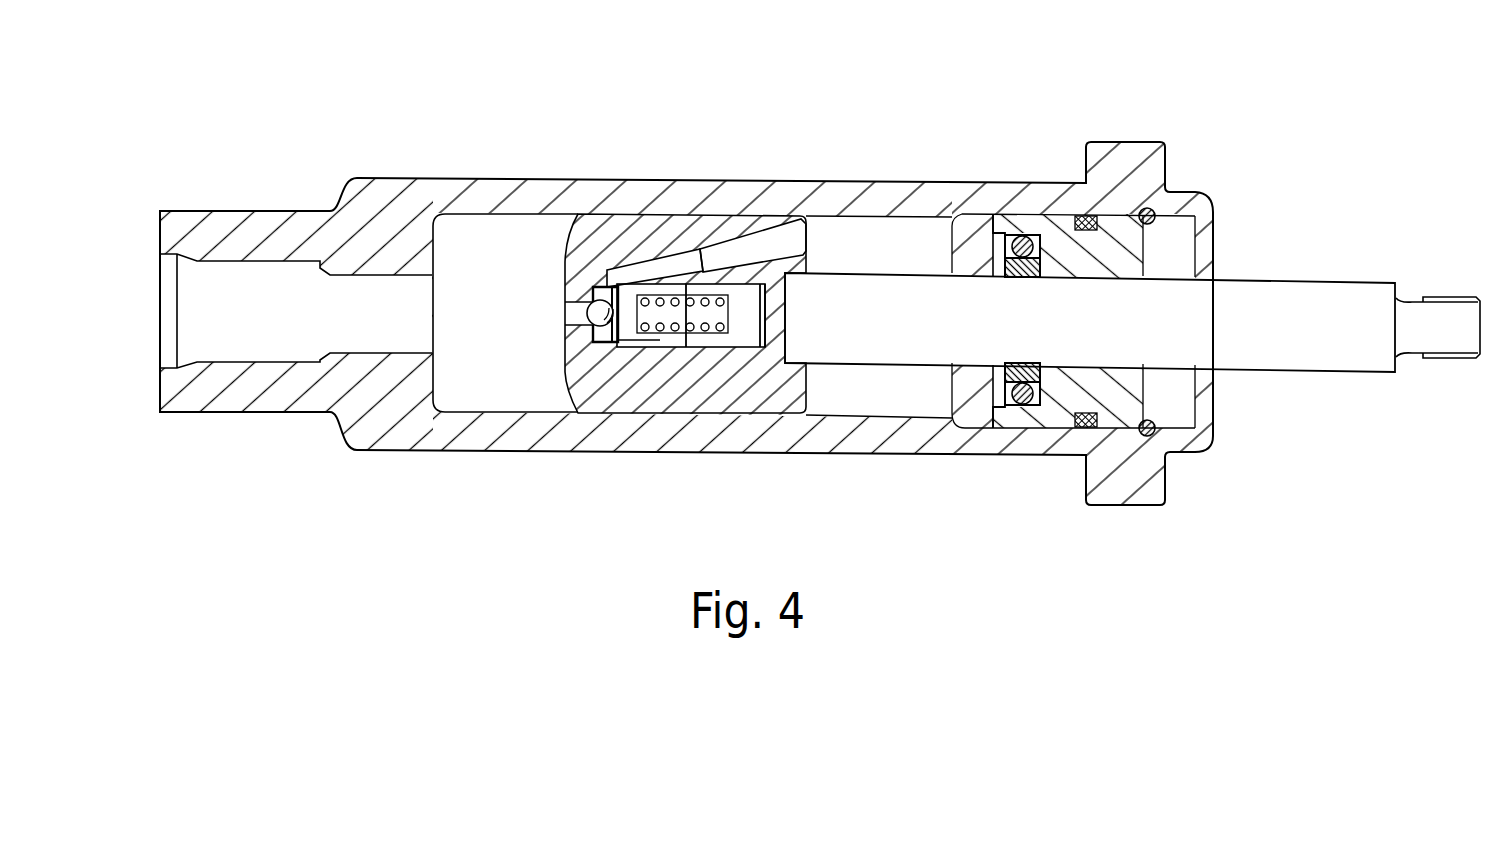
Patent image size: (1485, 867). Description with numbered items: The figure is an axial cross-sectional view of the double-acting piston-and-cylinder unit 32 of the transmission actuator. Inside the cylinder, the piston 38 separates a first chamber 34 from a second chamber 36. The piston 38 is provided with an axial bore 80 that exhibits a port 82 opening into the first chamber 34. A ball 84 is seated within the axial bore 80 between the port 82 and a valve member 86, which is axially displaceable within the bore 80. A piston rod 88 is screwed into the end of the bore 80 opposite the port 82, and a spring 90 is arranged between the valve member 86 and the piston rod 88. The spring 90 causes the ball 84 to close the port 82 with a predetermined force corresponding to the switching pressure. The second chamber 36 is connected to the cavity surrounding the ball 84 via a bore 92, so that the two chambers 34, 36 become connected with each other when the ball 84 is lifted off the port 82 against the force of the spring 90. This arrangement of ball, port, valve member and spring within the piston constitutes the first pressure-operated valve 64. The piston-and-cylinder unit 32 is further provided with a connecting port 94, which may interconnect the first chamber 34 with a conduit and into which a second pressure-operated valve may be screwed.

The double-acting piston-and-cylinder unit 32 is at (1017, 117).
The first chamber 34 is at (522, 238).
The second chamber 36 is at (882, 240).
The piston 38 is at (628, 238).
The first pressure-operated valve 64 is at (618, 334).
The axial bore 80 is at (663, 338).
The port 82 is at (568, 304).
The ball 84 is at (585, 312).
The valve member 86 is at (632, 335).
The piston rod 88 is at (856, 343).
The spring 90 is at (708, 334).
The bore 92 is at (746, 257).
The connecting port 94 is at (279, 262).